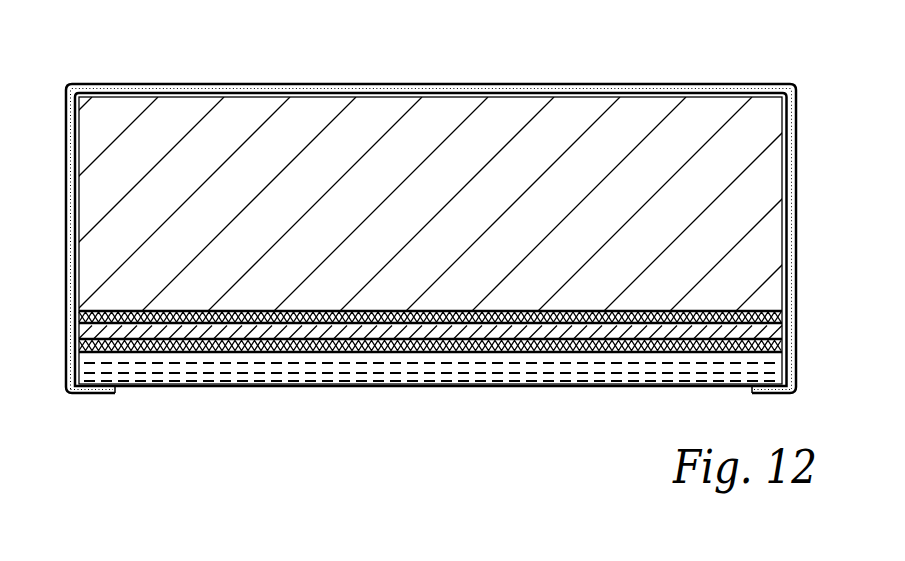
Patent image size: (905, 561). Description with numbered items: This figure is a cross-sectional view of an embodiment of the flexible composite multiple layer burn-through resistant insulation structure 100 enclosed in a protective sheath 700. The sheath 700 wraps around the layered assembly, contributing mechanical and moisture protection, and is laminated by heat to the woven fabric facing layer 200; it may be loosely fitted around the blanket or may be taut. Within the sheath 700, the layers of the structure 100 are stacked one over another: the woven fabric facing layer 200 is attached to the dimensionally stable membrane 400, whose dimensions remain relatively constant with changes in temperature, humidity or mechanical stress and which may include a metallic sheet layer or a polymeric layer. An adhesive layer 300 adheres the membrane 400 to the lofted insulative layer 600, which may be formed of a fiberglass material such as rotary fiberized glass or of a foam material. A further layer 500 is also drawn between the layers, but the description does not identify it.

The flexible composite multiple layer fire-resistant insulation structure 100 is at (264, 55).
The woven fabric facing layer 200 is at (791, 378).
The adhesive layer 300 is at (79, 352).
The dimensionally stable membrane 400 is at (790, 338).
The upper bonding layer 500 is at (789, 314).
The lofted insulative layer 600 is at (798, 168).
The sheath 700 is at (797, 108).